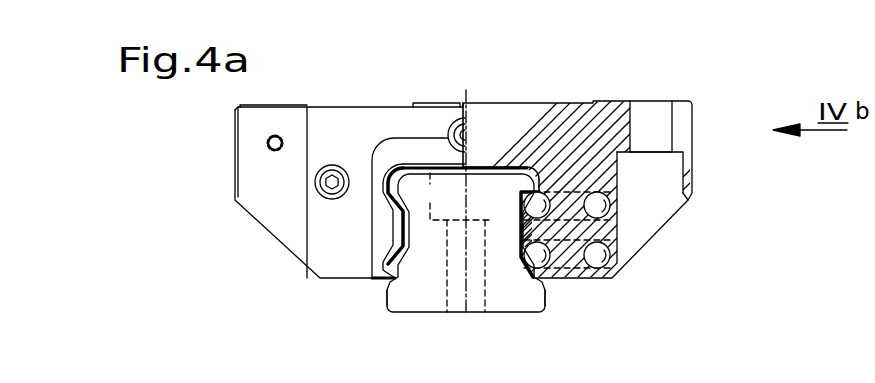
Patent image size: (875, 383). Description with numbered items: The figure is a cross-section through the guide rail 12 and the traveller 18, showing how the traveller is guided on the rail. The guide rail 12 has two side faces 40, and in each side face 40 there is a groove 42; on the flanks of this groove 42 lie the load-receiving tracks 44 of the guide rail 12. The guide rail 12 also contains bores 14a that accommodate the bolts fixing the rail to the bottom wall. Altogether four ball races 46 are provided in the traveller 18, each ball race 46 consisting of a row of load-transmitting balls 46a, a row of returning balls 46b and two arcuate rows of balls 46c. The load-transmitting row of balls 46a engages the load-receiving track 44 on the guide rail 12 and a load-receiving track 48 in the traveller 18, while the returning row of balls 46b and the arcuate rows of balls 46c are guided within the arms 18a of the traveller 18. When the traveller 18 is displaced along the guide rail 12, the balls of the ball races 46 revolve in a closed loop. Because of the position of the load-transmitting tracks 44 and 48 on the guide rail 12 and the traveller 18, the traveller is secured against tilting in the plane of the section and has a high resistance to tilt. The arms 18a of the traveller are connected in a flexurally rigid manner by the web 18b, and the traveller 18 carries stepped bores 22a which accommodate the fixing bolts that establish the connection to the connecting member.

The guide rail 12 is at (430, 303).
The bores 14a is at (470, 305).
The traveller 18 is at (369, 107).
The arms 18a is at (608, 186).
The web 18b is at (487, 120).
The stepped bores 22a is at (669, 193).
The side faces 40 is at (388, 293).
The groove 42 is at (413, 238).
The load-receiving tracks 44 is at (523, 197).
The ball races 46 is at (585, 184).
The load-transmitting balls 46a is at (527, 199).
The returning balls 46b is at (618, 204).
The arcuate rows of balls 46c is at (590, 228).
The load-receiving track 48 is at (556, 190).